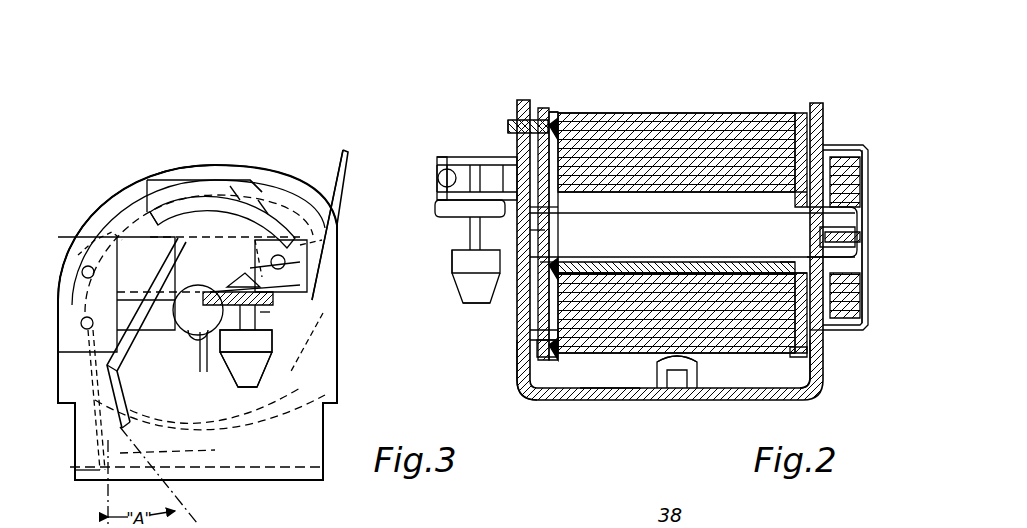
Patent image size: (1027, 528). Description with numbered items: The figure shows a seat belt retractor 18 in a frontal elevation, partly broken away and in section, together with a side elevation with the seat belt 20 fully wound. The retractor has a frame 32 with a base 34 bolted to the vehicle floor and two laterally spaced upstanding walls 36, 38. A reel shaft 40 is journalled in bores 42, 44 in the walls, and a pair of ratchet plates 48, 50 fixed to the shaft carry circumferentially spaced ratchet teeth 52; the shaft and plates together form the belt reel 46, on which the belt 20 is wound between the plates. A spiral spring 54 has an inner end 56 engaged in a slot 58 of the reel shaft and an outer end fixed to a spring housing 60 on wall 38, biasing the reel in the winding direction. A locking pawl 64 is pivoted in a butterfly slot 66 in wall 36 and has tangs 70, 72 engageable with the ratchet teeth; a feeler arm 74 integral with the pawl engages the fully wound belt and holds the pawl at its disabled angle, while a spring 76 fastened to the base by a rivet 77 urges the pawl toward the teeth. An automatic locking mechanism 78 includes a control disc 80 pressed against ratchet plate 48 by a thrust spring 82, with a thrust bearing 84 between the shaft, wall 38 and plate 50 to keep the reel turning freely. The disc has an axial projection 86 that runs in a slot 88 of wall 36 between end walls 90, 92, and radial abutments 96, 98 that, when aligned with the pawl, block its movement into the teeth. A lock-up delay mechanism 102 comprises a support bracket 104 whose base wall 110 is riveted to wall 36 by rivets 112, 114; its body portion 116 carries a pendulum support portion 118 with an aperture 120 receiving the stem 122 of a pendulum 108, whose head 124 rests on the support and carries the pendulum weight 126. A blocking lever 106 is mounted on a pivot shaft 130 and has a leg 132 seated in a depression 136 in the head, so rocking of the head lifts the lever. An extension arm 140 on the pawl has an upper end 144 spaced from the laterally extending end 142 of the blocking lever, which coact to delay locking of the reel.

In FIG. 3, the seat belt retractor 18 is at (92, 212).
In FIG. 2, the seat belt retractor 18 is at (642, 108).
In FIG. 3, the seat belt 20 is at (346, 185).
In FIG. 2, the seat belt 20 is at (750, 116).
In FIG. 3, the frame 32 is at (325, 470).
In FIG. 2, the frame 32 is at (550, 402).
In FIG. 3, the base 34 is at (272, 482).
In FIG. 2, the base 34 is at (612, 402).
In FIG. 3, the wall 36 is at (340, 362).
In FIG. 2, the wall 36 is at (515, 388).
In FIG. 2, the wall 38 is at (826, 365).
In FIG. 3, the reel shaft 40 is at (170, 330).
In FIG. 2, the reel shaft 40 is at (625, 207).
In FIG. 3, the bore 42 is at (206, 372).
In FIG. 2, the bore 42 is at (560, 215).
In FIG. 2, the bore 44 is at (800, 225).
In FIG. 2, the belt reel 46 is at (707, 110).
In FIG. 3, the ratchet plate 48 is at (240, 425).
In FIG. 2, the ratchet plate 48 is at (557, 118).
In FIG. 2, the ratchet plate 50 is at (802, 116).
In FIG. 3, the ratchet teeth 52 is at (325, 412).
In FIG. 2, the ratchet teeth 52 is at (558, 355).
In FIG. 2, the spiral spring 54 is at (865, 170).
In FIG. 2, the inner end 56 is at (862, 240).
In FIG. 2, the slot 58 is at (858, 222).
In FIG. 2, the spring housing 60 is at (848, 146).
In FIG. 3, the locking pawl 64 is at (110, 405).
In FIG. 2, the locking pawl 64 is at (826, 322).
In FIG. 3, the butterfly slot 66 is at (115, 437).
In FIG. 2, the tang 70 is at (540, 335).
In FIG. 2, the tang 72 is at (862, 303).
In FIG. 3, the feeler arm 74 is at (80, 365).
In FIG. 2, the feeler arm 74 is at (698, 260).
In FIG. 3, the spring 76 is at (88, 472).
In FIG. 2, the spring 76 is at (696, 388).
In FIG. 3, the rivet 77 is at (165, 455).
In FIG. 2, the rivet 77 is at (657, 386).
In FIG. 3, the automatic locking mechanism 78 is at (172, 205).
In FIG. 2, the automatic locking mechanism 78 is at (543, 103).
In FIG. 3, the control disc 80 is at (248, 200).
In FIG. 2, the control disc 80 is at (553, 110).
In FIG. 2, the thrust spring 82 is at (555, 262).
In FIG. 2, the thrust bearing 84 is at (792, 249).
In FIG. 3, the projection 86 is at (262, 205).
In FIG. 2, the projection 86 is at (510, 128).
In FIG. 3, the slot 88 is at (212, 205).
In FIG. 2, the slot 88 is at (520, 122).
In FIG. 3, the end wall 90 is at (160, 213).
In FIG. 3, the end wall 92 is at (333, 215).
In FIG. 3, the abutment 96 is at (80, 272).
In FIG. 3, the abutment 98 is at (195, 336).
In FIG. 3, the lock-up delay mechanism 102 is at (272, 312).
In FIG. 2, the lock-up delay mechanism 102 is at (433, 204).
In FIG. 3, the support bracket 104 is at (125, 215).
In FIG. 3, the blocking lever 106 is at (285, 250).
In FIG. 2, the blocking lever 106 is at (470, 165).
In FIG. 3, the pendulum 108 is at (272, 372).
In FIG. 2, the pendulum 108 is at (462, 290).
In FIG. 3, the base wall 110 is at (82, 233).
In FIG. 3, the rivet 112 is at (88, 262).
In FIG. 3, the rivet 114 is at (82, 320).
In FIG. 3, the body portion 116 is at (300, 285).
In FIG. 2, the body portion 116 is at (442, 172).
In FIG. 3, the pendulum support portion 118 is at (300, 297).
In FIG. 2, the pendulum support portion 118 is at (452, 262).
In FIG. 3, the aperture 120 is at (245, 358).
In FIG. 3, the stem 122 is at (268, 350).
In FIG. 2, the stem 122 is at (476, 261).
In FIG. 3, the head 124 is at (292, 262).
In FIG. 2, the head 124 is at (468, 232).
In FIG. 3, the pendulum weight 126 is at (255, 368).
In FIG. 2, the pendulum weight 126 is at (480, 305).
In FIG. 3, the pivot shaft 130 is at (322, 240).
In FIG. 2, the pivot shaft 130 is at (432, 170).
In FIG. 3, the leg 132 is at (222, 258).
In FIG. 3, the depression 136 is at (228, 287).
In FIG. 3, the extension arm 140 is at (150, 283).
In FIG. 2, the extension arm 140 is at (532, 232).
In FIG. 3, the end 142 is at (205, 225).
In FIG. 2, the end 142 is at (500, 168).
In FIG. 3, the upper end 144 is at (158, 265).